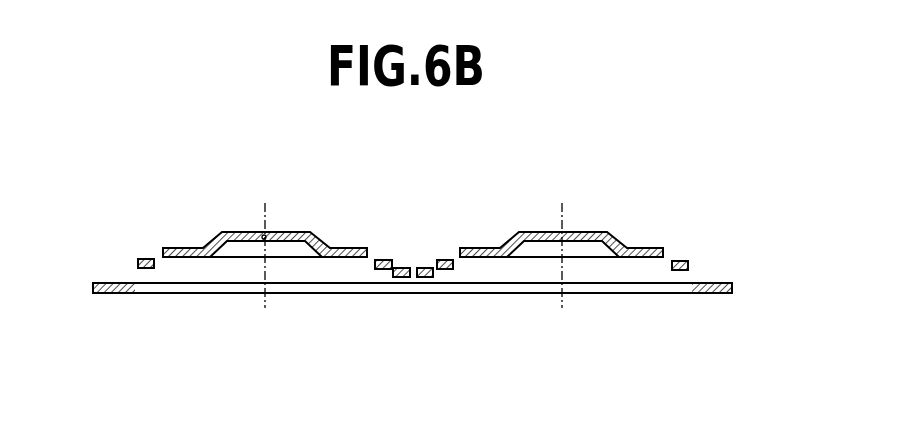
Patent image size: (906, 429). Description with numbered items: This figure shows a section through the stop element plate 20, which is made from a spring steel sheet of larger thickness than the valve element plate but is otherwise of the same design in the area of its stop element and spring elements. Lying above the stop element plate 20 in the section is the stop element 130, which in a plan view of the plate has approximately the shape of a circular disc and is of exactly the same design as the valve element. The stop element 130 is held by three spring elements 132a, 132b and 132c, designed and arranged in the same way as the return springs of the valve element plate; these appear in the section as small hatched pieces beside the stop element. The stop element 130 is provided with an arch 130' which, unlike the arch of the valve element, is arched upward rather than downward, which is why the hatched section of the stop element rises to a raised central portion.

The stop element plate 20 is at (715, 283).
The stop element 130 is at (266, 220).
The arch 130' is at (257, 292).
The spring element 132a is at (383, 260).
The spring element 132b is at (401, 268).
The spring element 132c is at (147, 259).